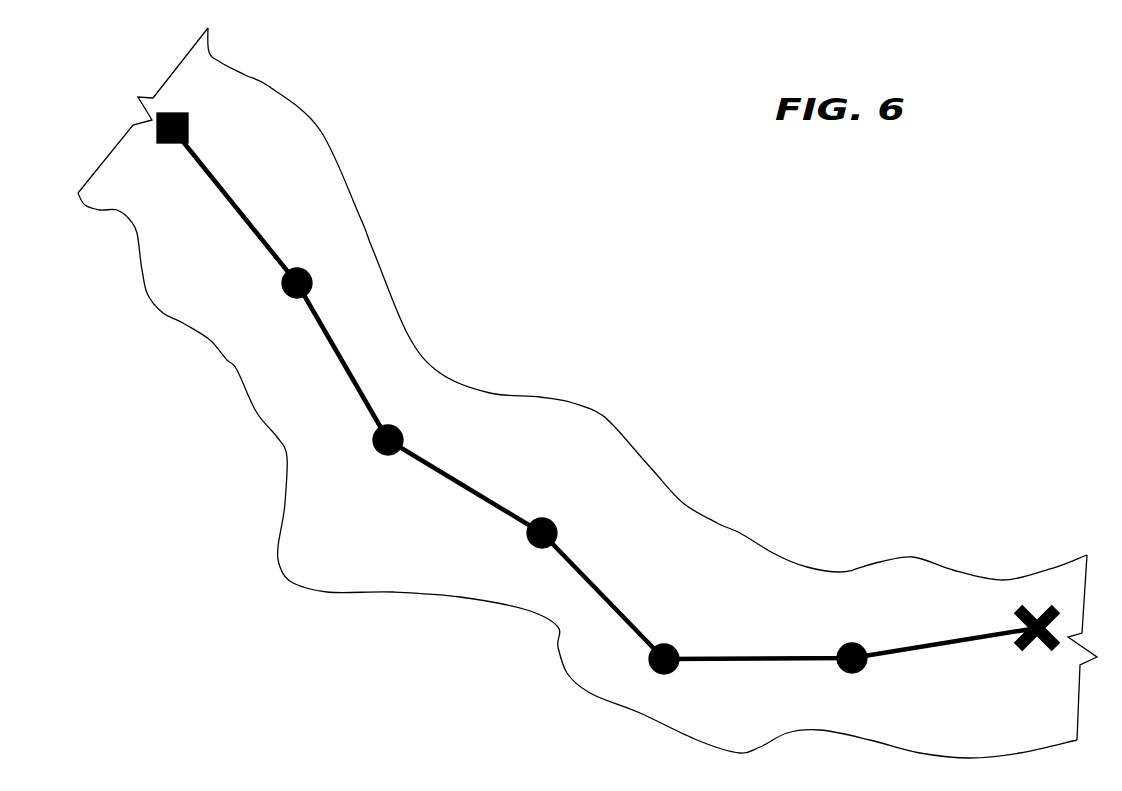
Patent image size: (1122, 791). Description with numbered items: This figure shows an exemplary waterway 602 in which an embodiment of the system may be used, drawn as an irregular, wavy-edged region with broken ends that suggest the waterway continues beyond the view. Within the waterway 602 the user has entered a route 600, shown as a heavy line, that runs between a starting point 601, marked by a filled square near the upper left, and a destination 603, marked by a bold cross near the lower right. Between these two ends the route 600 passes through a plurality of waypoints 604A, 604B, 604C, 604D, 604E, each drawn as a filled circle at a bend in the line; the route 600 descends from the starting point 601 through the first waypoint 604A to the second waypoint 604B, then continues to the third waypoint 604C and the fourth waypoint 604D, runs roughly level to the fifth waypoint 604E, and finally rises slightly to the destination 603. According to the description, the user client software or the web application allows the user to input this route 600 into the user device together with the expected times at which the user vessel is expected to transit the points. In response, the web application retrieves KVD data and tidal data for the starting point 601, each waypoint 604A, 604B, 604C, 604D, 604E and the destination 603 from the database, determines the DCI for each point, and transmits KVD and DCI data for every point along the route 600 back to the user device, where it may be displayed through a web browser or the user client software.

The route 600 is at (466, 491).
The starting point 601 is at (188, 115).
The waterway 602 is at (612, 423).
The destination 603 is at (1024, 643).
The waypoint 604A is at (282, 285).
The waypoint 604B is at (403, 442).
The waypoint 604C is at (557, 533).
The waypoint 604D is at (680, 648).
The waypoint 604E is at (843, 670).